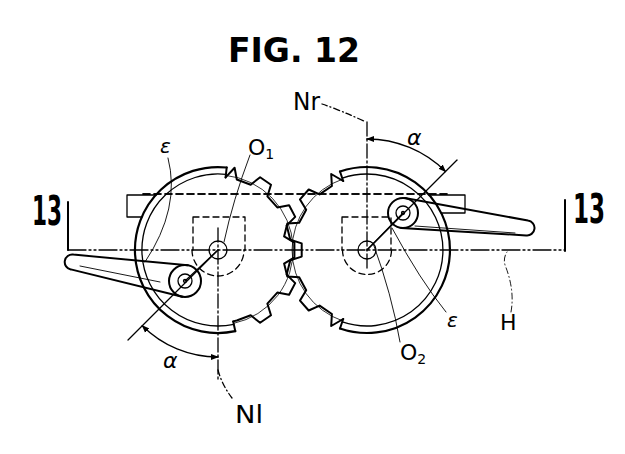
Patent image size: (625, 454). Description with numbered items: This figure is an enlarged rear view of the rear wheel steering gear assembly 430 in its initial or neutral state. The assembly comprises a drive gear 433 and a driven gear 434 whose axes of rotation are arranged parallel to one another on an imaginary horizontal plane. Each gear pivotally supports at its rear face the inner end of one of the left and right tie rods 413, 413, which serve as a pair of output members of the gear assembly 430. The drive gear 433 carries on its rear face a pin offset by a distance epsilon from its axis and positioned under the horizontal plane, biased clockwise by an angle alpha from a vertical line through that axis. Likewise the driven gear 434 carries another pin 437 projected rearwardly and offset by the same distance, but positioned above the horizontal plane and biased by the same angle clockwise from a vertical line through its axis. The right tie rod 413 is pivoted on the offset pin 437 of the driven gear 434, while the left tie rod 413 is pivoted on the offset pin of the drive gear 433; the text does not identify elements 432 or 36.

The rear wheel steering gear assembly 430 is at (152, 142).
The housing bar 432 is at (132, 195).
The drive gear 433 is at (213, 187).
The driven gear 434 is at (372, 318).
The pin 437 is at (416, 209).
The tie rods 413 is at (82, 271).
The pivot boss 36 is at (147, 287).